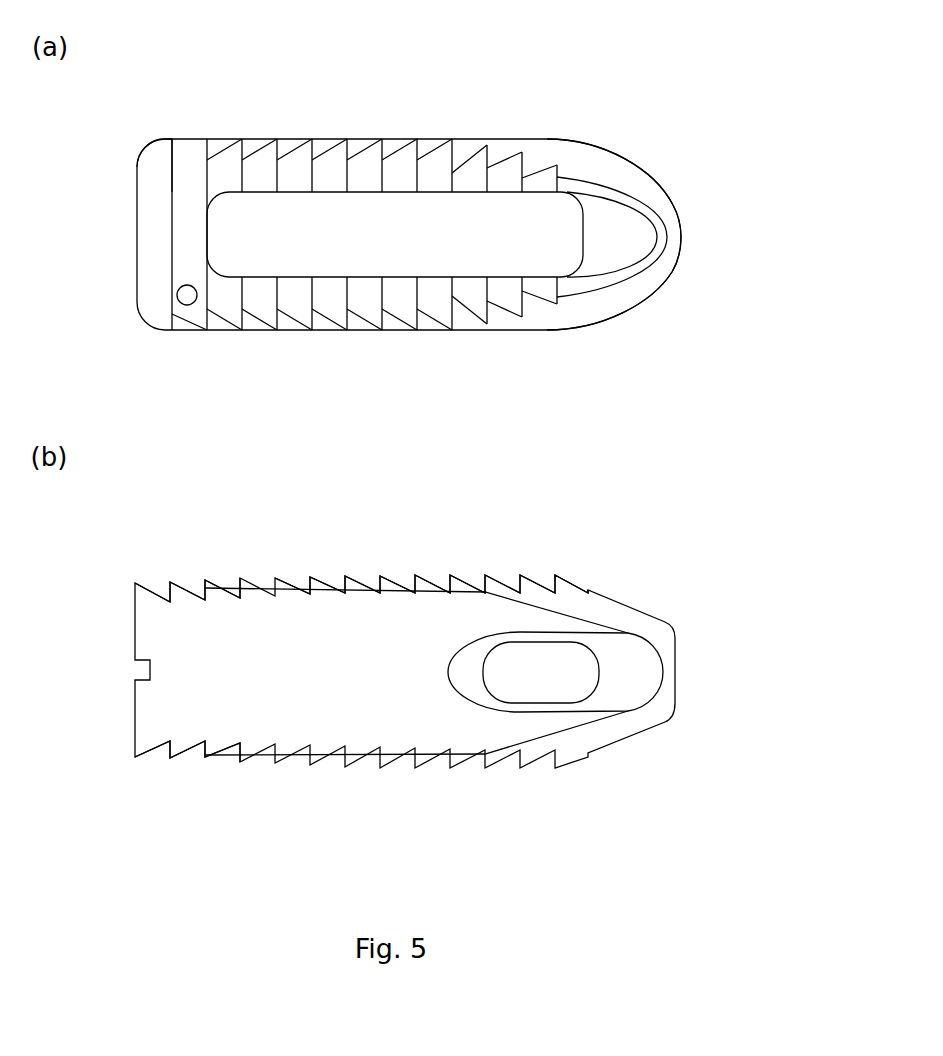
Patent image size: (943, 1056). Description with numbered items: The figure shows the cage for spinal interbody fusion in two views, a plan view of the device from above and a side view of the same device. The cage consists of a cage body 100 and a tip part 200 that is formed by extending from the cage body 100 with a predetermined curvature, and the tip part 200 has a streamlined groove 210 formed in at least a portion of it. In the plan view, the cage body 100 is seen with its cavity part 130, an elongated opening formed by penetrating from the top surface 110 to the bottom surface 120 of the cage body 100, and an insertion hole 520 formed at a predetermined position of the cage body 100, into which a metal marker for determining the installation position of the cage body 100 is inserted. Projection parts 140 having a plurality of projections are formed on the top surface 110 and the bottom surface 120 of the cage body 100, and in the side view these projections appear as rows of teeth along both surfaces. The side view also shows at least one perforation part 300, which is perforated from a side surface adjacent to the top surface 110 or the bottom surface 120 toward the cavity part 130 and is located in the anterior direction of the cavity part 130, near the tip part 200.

The cage body 100 is at (586, 94).
The top surface 110 is at (167, 189).
The bottom surface 120 is at (205, 757).
The cavity part 130 is at (367, 225).
The projection parts 140 is at (469, 173).
The tip part 200 is at (697, 221).
The streamlined groove 210 is at (625, 227).
The perforation part 300 is at (538, 675).
The insertion hole 520 is at (180, 294).